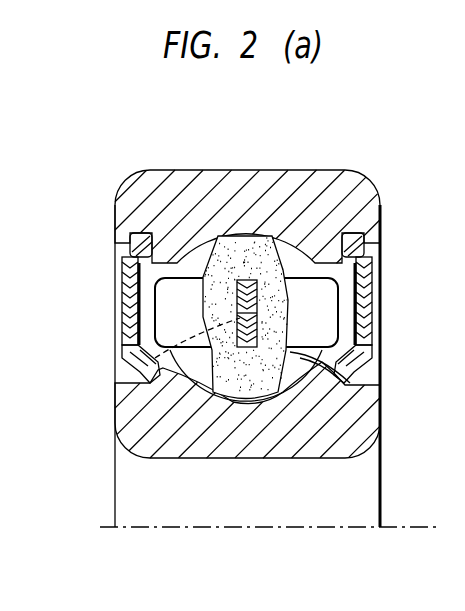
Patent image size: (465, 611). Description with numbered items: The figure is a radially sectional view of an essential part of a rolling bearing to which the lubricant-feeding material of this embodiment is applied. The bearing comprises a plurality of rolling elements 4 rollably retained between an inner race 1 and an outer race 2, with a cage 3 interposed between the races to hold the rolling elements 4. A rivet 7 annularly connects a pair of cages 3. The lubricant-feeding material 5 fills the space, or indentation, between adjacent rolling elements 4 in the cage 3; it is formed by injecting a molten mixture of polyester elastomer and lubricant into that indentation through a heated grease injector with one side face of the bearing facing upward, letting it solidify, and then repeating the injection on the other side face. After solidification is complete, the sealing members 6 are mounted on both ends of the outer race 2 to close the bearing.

The inner race 1 is at (357, 415).
The outer race 2 is at (332, 187).
The cage 3 is at (352, 294).
The rolling element 4 is at (201, 258).
The lubricant-feeding material 5 is at (340, 361).
The sealing member 6 is at (122, 297).
The rivet 7 is at (153, 358).